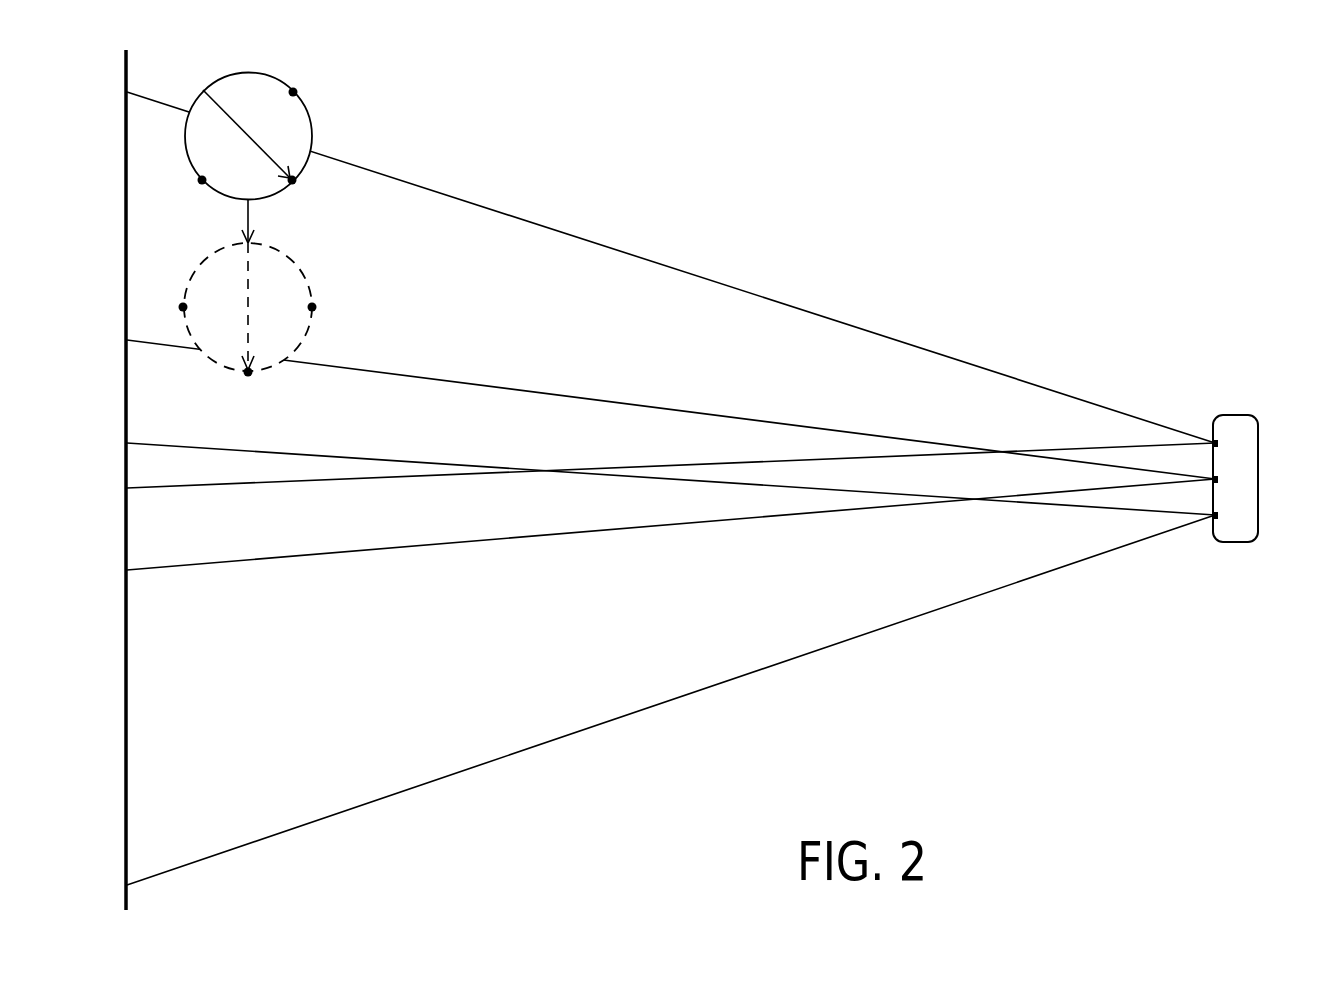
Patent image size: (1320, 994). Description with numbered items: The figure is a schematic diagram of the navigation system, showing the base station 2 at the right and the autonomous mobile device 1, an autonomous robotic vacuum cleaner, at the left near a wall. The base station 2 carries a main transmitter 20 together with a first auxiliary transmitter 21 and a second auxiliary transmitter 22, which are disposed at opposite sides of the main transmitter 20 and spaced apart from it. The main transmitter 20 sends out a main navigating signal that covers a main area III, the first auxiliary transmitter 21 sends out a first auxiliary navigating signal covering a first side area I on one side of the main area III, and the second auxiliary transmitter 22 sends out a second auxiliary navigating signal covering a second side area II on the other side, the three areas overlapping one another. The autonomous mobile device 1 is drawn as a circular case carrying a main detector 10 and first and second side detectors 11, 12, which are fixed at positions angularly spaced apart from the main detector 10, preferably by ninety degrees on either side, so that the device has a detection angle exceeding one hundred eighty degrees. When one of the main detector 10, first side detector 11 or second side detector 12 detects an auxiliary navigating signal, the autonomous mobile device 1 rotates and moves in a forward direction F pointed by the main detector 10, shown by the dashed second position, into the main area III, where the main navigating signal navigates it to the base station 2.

The autonomous mobile device 1 is at (318, 128).
The main detector 10 is at (292, 180).
The first side detector 11 is at (293, 92).
The second side detector 12 is at (183, 307).
The base station 2 is at (1243, 400).
The main transmitter 20 is at (1218, 479).
The first auxiliary transmitter 21 is at (1218, 443).
The second auxiliary transmitter 22 is at (1218, 515).
The first side area I is at (838, 367).
The second side area II is at (880, 562).
The main area III is at (1062, 475).
The forward direction F is at (257, 221).